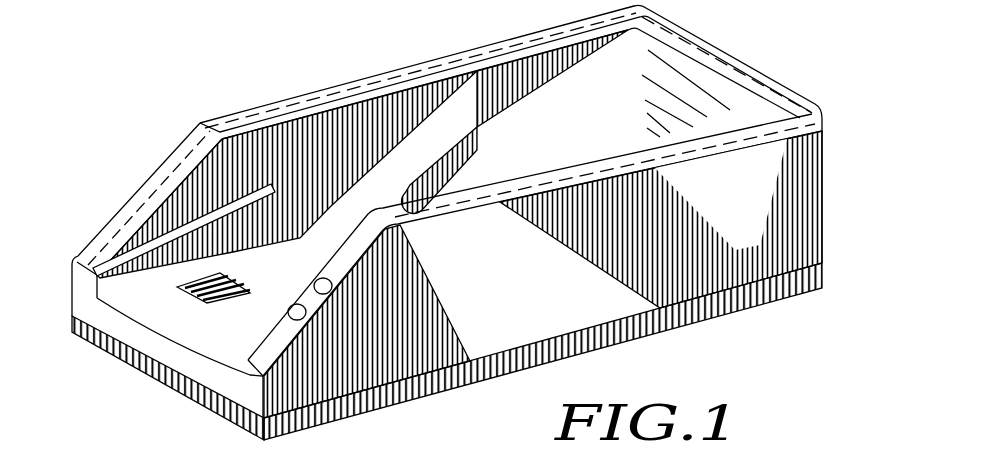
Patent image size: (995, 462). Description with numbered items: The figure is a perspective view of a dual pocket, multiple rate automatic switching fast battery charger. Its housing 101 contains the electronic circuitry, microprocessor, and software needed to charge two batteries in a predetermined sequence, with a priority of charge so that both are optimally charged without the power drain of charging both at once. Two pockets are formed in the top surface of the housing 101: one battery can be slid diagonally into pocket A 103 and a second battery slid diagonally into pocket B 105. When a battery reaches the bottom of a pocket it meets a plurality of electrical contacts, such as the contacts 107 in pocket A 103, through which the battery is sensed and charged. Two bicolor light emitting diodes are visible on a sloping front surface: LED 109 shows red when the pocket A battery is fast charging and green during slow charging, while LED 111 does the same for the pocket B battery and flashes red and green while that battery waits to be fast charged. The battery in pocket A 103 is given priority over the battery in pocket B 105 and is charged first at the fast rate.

The housing 101 is at (824, 190).
The pocket "A" 103 is at (387, 187).
The pocket "B" 105 is at (610, 103).
The electrical contacts 107 is at (100, 337).
The bicolor light emitting diode (LED) 109 is at (220, 338).
The bicolor light emitting diode (LED) 111 is at (332, 292).